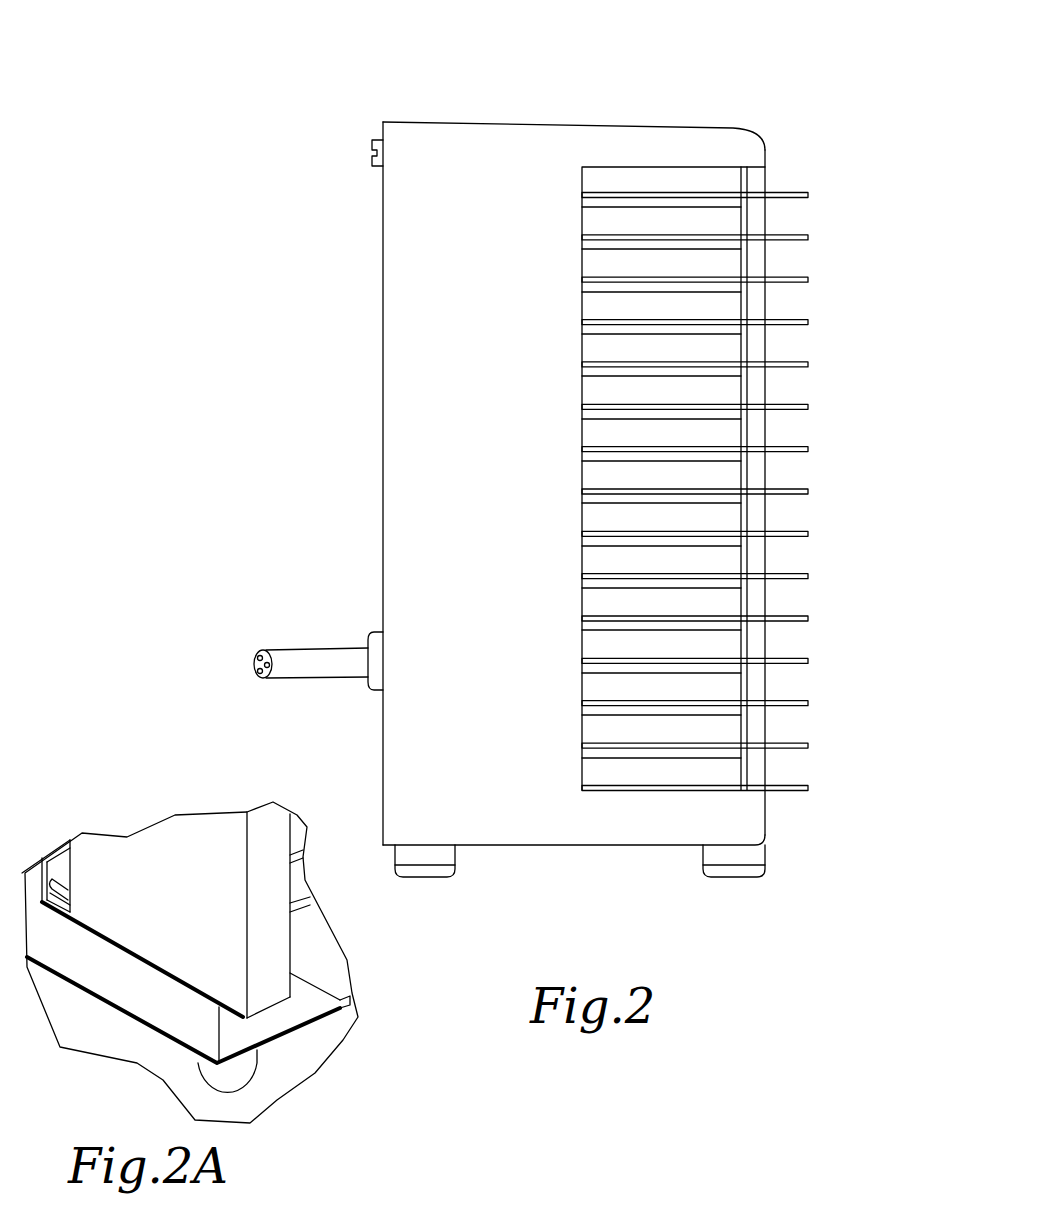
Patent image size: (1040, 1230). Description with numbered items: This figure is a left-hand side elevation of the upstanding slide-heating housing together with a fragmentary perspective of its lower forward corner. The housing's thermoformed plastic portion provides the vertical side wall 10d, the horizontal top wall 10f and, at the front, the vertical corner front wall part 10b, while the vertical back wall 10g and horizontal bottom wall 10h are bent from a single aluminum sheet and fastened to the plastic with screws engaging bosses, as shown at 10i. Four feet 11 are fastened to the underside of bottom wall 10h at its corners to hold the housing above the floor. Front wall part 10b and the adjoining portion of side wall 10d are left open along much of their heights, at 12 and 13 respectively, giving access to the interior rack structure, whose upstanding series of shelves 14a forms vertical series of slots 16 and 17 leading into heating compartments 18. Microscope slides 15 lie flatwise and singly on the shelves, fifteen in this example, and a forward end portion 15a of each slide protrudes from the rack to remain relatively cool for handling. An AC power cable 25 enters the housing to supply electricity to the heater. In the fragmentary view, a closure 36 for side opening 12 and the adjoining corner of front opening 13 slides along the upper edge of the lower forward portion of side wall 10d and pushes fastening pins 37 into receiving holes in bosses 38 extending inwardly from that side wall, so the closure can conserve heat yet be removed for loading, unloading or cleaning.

In FIG. 2, the vertical corner front wall part 10b is at (765, 180).
In FIG. 2, the vertical side wall 10d is at (510, 283).
In FIG. 2A, the vertical side wall 10d is at (140, 990).
In FIG. 2, the horizontal top wall 10f is at (532, 122).
In FIG. 2, the vertical back wall 10g is at (383, 374).
In FIG. 2, the horizontal bottom wall 10h is at (588, 847).
In FIG. 2, the fastening 10i is at (372, 145).
In FIG. 2, the feet 11 is at (445, 878).
In FIG. 2, the opening 12 is at (772, 344).
In FIG. 2, the opening 13 is at (701, 176).
In FIG. 2, the shelves 14a is at (585, 458).
In FIG. 2, the microscope slide 15 is at (588, 782).
In FIG. 2, the forward end portion 15a is at (810, 703).
In FIG. 2, the slots 16 is at (772, 216).
In FIG. 2, the slots 17 is at (712, 556).
In FIG. 2, the heating compartments 18 is at (709, 569).
In FIG. 2, the AC power cable 25 is at (297, 660).
In FIG. 2A, the closure 36 is at (199, 899).
In FIG. 2A, the fastening pins 37 is at (52, 895).
In FIG. 2A, the bosses 38 is at (55, 880).